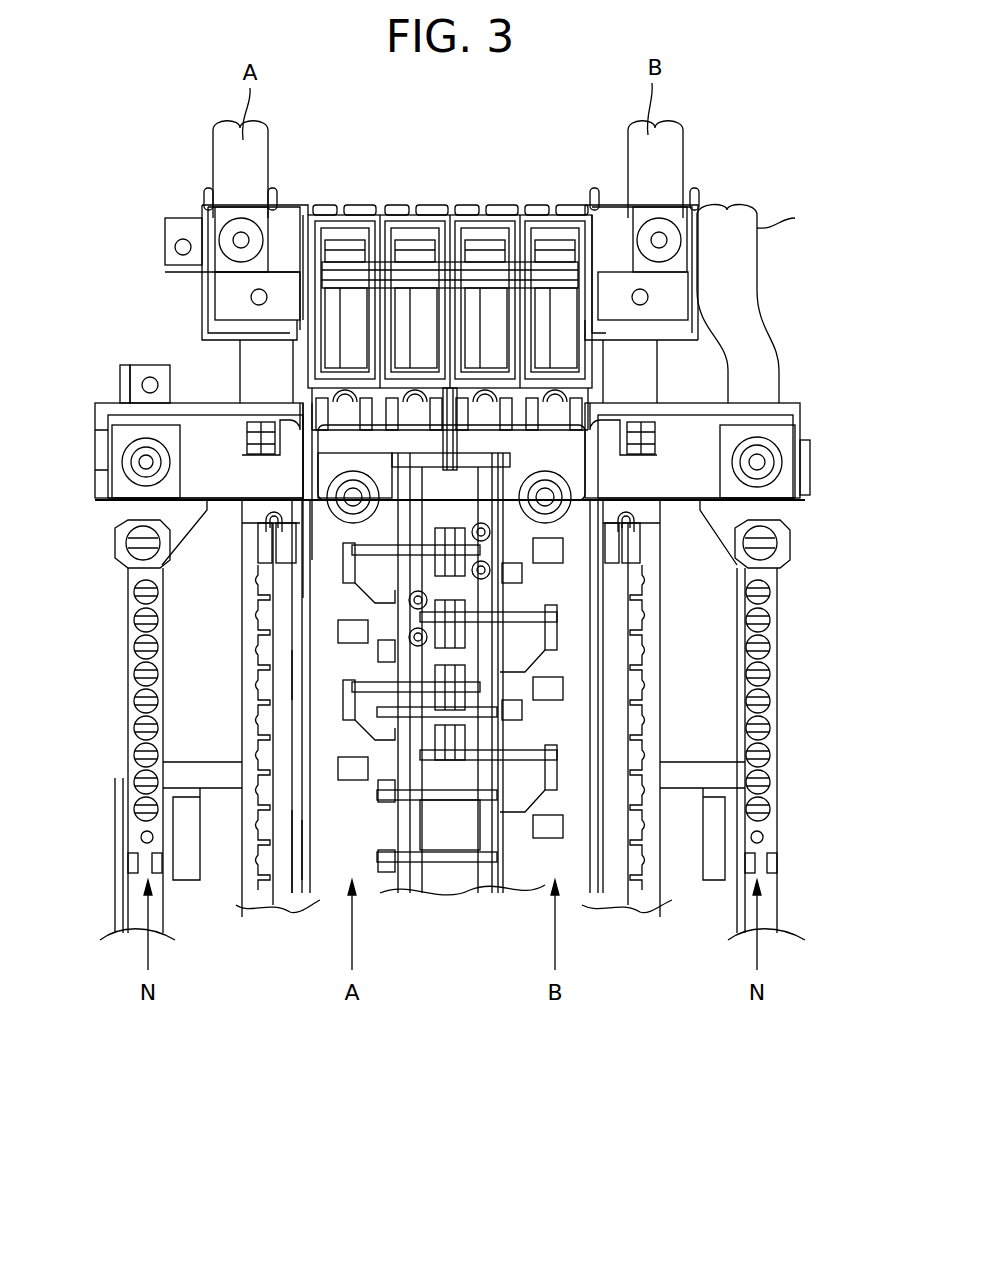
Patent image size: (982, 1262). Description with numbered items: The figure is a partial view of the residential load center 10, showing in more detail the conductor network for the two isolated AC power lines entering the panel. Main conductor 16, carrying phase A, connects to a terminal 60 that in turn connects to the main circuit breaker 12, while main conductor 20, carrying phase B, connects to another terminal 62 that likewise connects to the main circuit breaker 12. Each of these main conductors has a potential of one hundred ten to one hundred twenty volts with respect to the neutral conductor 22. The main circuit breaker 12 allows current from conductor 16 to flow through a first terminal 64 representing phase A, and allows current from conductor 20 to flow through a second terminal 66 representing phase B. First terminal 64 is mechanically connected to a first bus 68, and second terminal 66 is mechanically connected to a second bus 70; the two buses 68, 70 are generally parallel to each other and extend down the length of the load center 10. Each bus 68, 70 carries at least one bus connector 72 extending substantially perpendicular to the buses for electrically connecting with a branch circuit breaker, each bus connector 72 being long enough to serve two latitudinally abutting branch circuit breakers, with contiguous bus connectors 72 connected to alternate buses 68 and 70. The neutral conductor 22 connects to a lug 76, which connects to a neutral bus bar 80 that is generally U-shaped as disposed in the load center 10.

The residential load center 10 is at (468, 1016).
The main circuit breaker 12 is at (425, 300).
The main conductor 16 is at (213, 176).
The main conductor 20 is at (683, 152).
The neutral conductor 22 is at (760, 302).
The terminal 60 is at (208, 208).
The terminal 62 is at (688, 195).
The first terminal 64 is at (300, 435).
The second terminal 66 is at (560, 445).
The first bus 68 is at (330, 602).
The second bus 70 is at (580, 580).
The bus connector 72 is at (307, 528).
The lug 76 is at (782, 470).
The neutral bus bar 80 is at (128, 712).